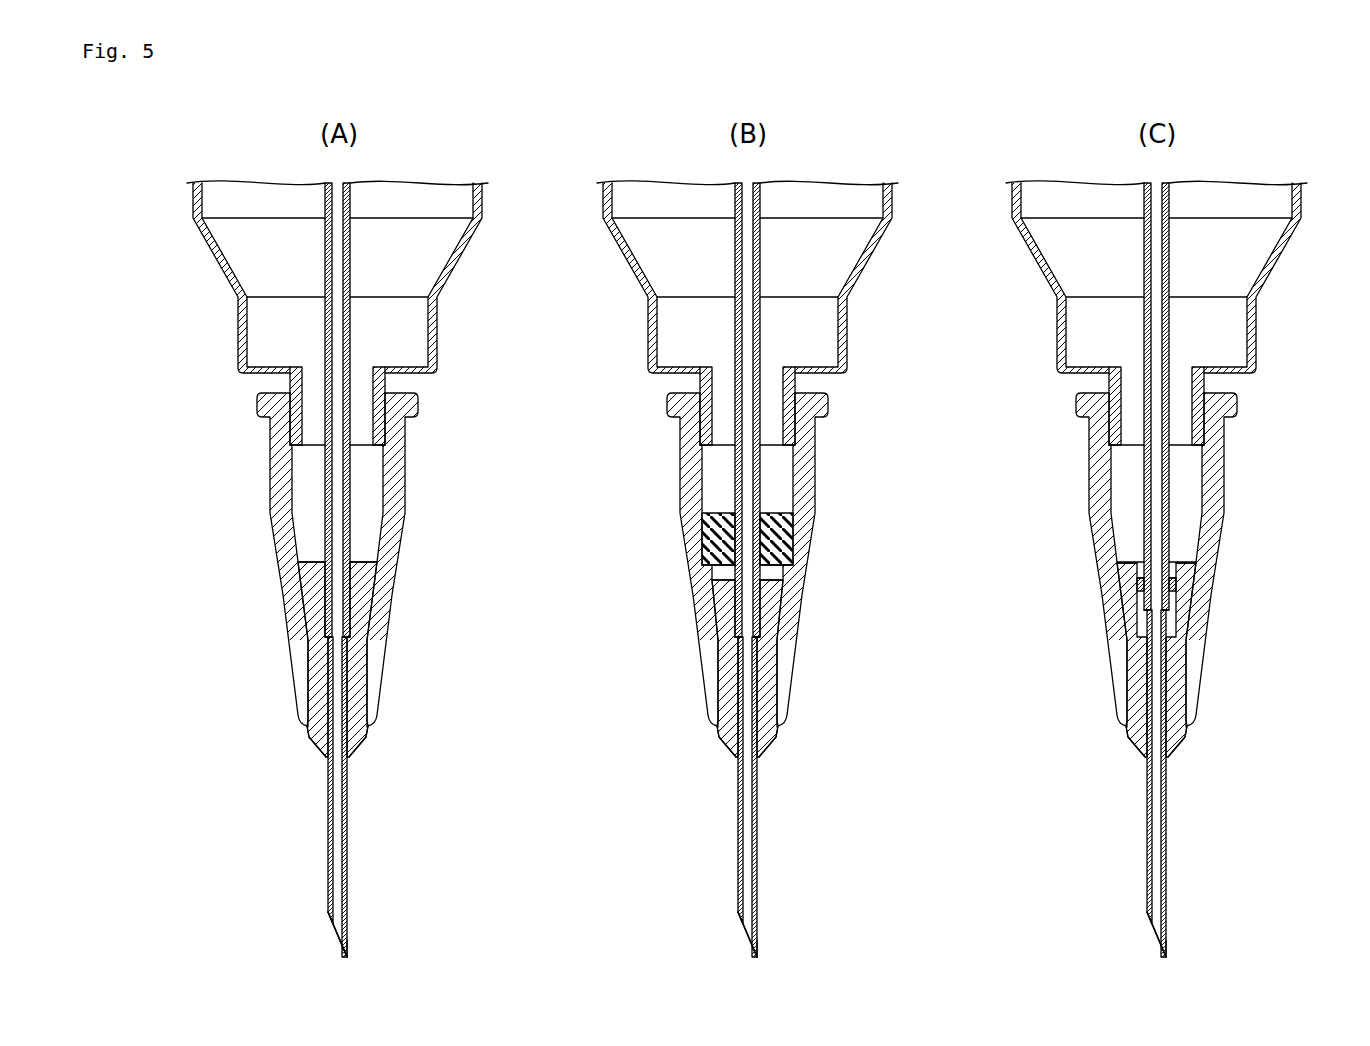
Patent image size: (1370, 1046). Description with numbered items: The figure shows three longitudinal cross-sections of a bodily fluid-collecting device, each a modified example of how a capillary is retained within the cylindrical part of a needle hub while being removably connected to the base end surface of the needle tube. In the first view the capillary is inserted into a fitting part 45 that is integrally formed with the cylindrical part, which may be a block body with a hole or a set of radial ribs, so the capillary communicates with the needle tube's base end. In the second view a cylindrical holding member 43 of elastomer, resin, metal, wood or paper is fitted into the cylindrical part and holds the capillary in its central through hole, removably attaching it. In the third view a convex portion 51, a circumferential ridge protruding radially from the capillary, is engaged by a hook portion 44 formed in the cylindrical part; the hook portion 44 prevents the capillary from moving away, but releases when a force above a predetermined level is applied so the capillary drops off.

The holding member 43 is at (787, 539).
The hook portion 44 is at (1198, 547).
The fitting part 45 is at (360, 583).
The convex portion 51 is at (1201, 584).